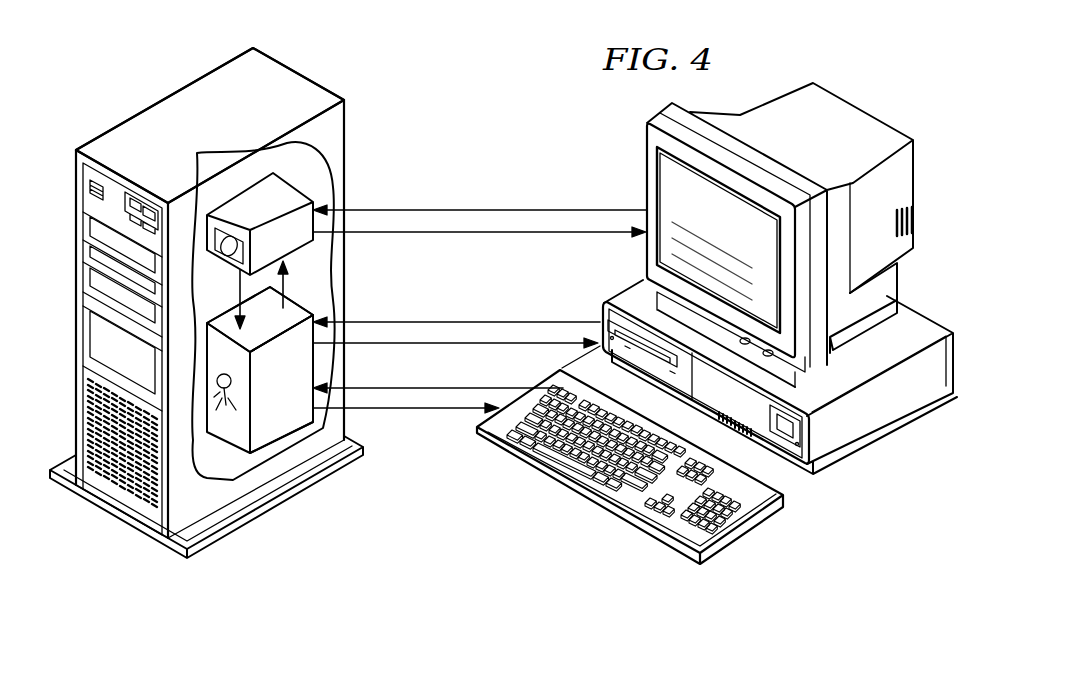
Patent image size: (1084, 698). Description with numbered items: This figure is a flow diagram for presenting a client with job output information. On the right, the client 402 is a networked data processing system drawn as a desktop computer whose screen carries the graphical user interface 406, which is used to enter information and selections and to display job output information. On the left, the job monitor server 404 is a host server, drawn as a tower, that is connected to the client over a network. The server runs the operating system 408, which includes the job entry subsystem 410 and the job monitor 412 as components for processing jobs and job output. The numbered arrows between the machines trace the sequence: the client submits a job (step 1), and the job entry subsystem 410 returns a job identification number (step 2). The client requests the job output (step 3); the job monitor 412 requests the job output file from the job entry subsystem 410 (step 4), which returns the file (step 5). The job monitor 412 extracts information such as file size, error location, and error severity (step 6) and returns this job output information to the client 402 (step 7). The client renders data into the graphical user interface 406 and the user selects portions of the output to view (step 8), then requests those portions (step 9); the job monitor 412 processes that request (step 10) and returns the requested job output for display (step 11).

The client 402 is at (850, 115).
The job monitor server 404 is at (290, 76).
The graphical user interface 406 is at (661, 177).
The operating system 408 is at (159, 129).
The job entry subsystem 410 is at (288, 196).
The job monitor 412 is at (277, 423).
The step 1 is at (480, 201).
The step 2 is at (479, 242).
The step 3 is at (456, 313).
The step 4 is at (287, 284).
The step 5 is at (233, 299).
The step 6 is at (260, 319).
The step 7 is at (455, 353).
The step 8 is at (780, 377).
The step 9 is at (438, 378).
The step 10 is at (281, 384).
The step 11 is at (406, 418).